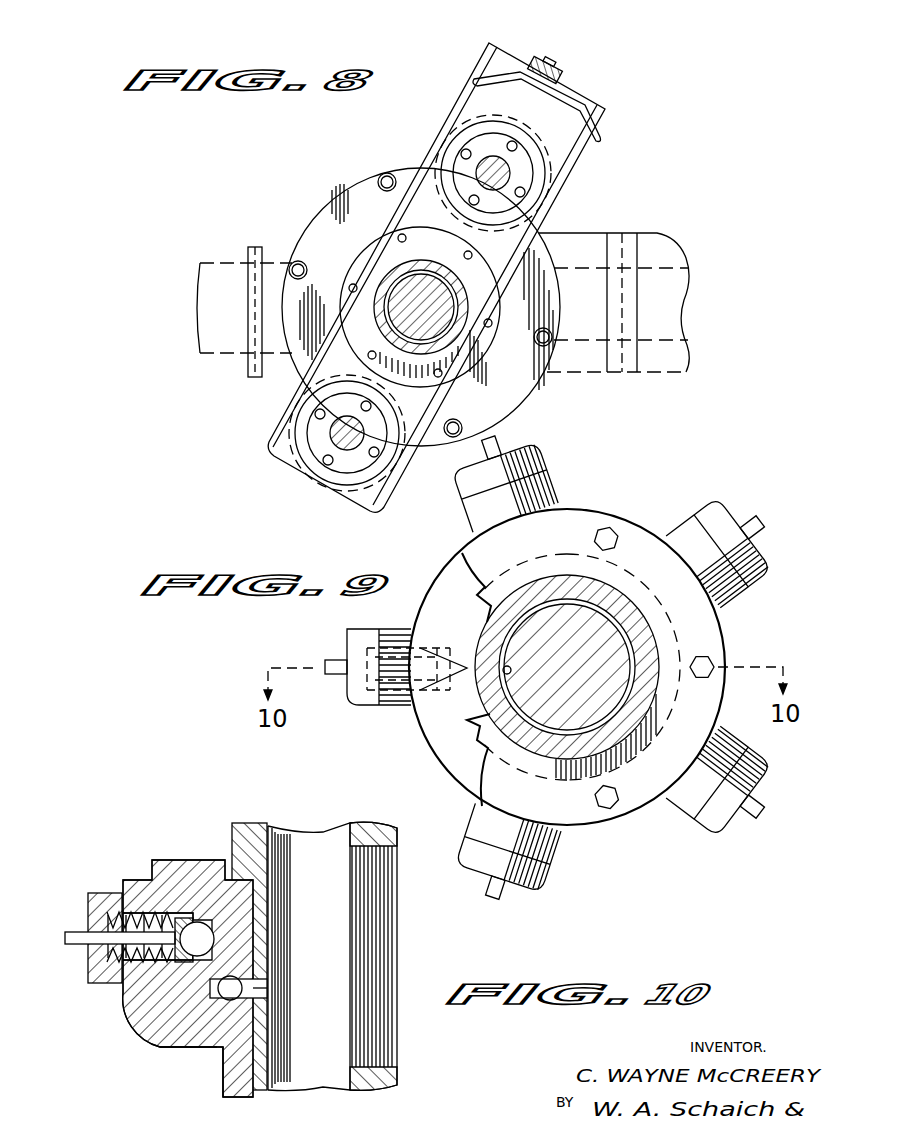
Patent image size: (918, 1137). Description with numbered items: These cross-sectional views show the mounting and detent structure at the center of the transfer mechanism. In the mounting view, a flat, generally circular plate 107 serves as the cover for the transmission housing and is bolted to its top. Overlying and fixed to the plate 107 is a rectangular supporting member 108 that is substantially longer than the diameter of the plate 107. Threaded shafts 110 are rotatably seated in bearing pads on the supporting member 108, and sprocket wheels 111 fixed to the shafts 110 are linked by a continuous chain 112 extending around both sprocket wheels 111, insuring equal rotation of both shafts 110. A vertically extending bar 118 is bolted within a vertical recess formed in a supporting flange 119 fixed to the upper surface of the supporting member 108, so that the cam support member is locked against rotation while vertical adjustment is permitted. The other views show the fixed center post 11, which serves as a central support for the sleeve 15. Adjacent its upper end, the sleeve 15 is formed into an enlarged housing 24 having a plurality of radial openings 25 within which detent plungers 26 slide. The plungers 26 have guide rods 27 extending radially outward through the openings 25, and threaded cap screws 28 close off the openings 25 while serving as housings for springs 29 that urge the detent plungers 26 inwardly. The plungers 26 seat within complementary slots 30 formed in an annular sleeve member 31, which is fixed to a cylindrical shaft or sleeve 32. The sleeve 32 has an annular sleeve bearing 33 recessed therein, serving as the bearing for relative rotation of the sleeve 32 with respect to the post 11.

In FIG. 9, the center post 11 is at (567, 667).
In FIG. 10, the center post 11 is at (377, 927).
In FIG. 10, the sleeve 15 is at (235, 1077).
In FIG. 10, the enlarged housing 24 is at (137, 994).
In FIG. 9, the radial openings 25 is at (387, 653).
In FIG. 10, the radial openings 25 is at (177, 918).
In FIG. 10, the detent plungers 26 is at (199, 925).
In FIG. 9, the guide rods 27 is at (495, 447).
In FIG. 10, the guide rods 27 is at (80, 928).
In FIG. 10, the threaded cap screws 28 is at (102, 897).
In FIG. 10, the springs 29 is at (95, 970).
In FIG. 9, the complementary slots 30 is at (480, 600).
In FIG. 10, the complementary slots 30 is at (203, 965).
In FIG. 9, the annular sleeve member 31 is at (475, 715).
In FIG. 10, the annular sleeve member 31 is at (227, 900).
In FIG. 9, the cylindrical shaft or sleeve 32 is at (497, 638).
In FIG. 10, the cylindrical shaft or sleeve 32 is at (243, 833).
In FIG. 9, the annular sleeve bearing 33 is at (503, 672).
In FIG. 10, the annular sleeve bearing 33 is at (263, 928).
In FIG. 8, the plate 107 is at (327, 225).
In FIG. 8, the rectangular supporting member 108 is at (280, 432).
In FIG. 8, the threaded shafts 110 is at (510, 182).
In FIG. 8, the sprocket wheels 111 is at (523, 168).
In FIG. 8, the continuous chain 112 is at (427, 180).
In FIG. 8, the vertically extending bar 118 is at (562, 82).
In FIG. 8, the supporting flange 119 is at (508, 64).